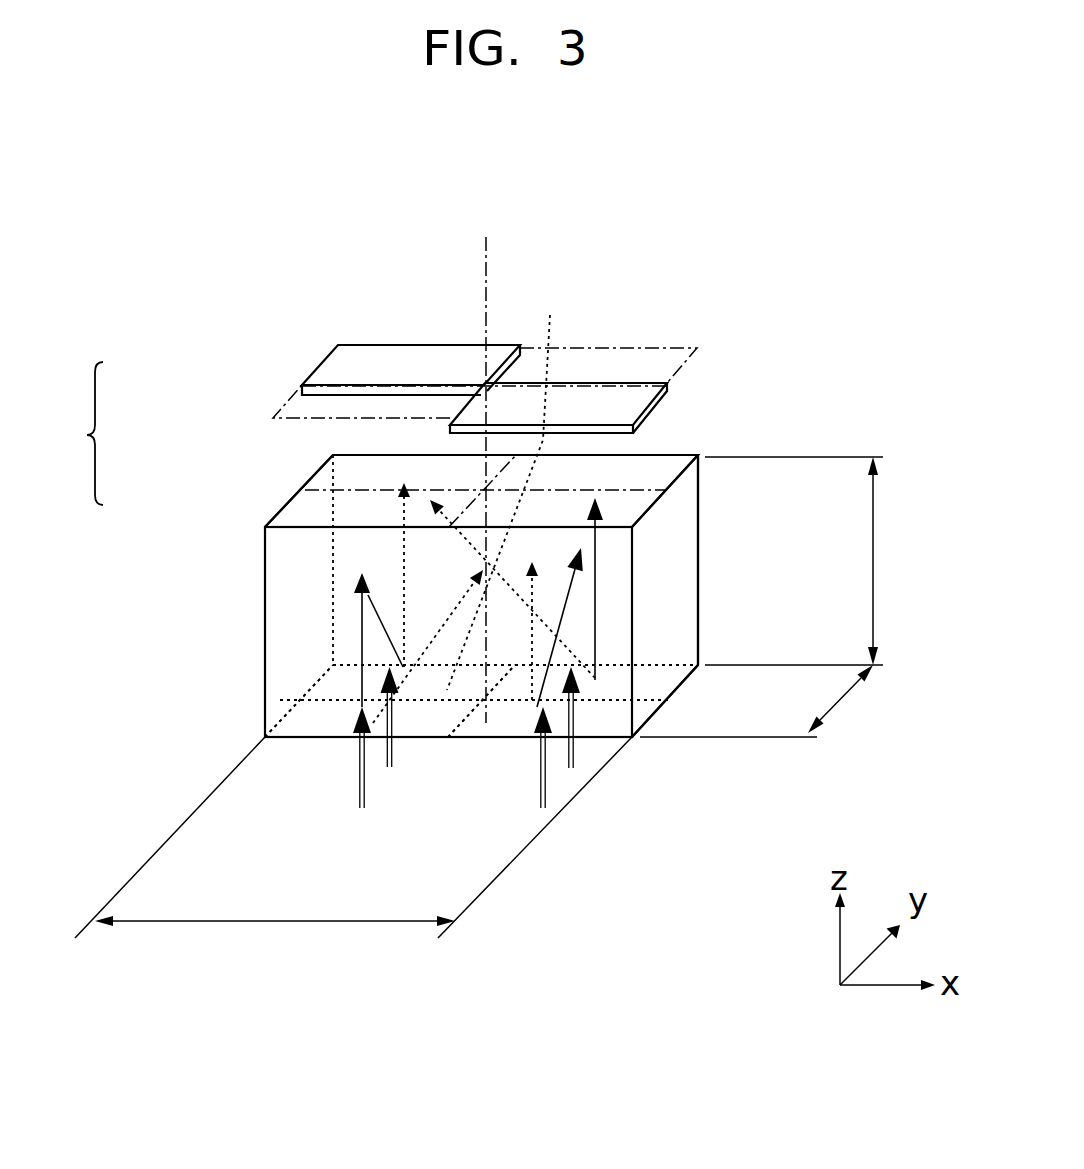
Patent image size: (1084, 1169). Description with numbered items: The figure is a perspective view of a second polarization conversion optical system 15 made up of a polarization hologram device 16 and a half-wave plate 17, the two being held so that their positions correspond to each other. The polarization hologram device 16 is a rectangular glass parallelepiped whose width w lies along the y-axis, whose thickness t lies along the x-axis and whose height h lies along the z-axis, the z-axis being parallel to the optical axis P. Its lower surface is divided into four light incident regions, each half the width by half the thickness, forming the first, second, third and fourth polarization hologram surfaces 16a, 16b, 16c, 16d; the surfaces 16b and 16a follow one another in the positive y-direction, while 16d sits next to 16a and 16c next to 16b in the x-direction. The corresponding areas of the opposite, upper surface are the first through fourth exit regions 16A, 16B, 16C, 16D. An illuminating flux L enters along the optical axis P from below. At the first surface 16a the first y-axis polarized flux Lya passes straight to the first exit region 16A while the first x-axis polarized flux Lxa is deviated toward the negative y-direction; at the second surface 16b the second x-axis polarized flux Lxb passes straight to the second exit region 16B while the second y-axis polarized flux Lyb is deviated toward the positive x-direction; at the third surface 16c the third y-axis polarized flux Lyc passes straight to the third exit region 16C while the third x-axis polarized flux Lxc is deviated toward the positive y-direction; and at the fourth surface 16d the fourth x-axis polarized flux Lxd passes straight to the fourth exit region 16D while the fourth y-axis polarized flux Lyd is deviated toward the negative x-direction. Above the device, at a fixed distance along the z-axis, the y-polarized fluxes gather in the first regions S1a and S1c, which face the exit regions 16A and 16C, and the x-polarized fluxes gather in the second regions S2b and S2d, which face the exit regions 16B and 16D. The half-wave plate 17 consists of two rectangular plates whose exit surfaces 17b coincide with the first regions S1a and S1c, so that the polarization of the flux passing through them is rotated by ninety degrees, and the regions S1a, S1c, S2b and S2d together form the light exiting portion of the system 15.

The second polarization conversion optical system 15 is at (84, 452).
The polarization hologram device 16 is at (230, 548).
The half-wave plate 17 is at (444, 310).
The exit surface 17b is at (526, 310).
The first region S1a is at (355, 353).
The first region S1c is at (625, 400).
The second region S2b is at (412, 387).
The second region S2d is at (587, 347).
The optical axis P is at (485, 268).
The first exit region 16A is at (343, 481).
The second exit region 16B is at (297, 517).
The third exit region 16C is at (633, 507).
The fourth exit region 16D is at (657, 470).
The first polarization hologram surface 16a is at (333, 665).
The second polarization hologram surface 16b is at (318, 723).
The third polarization hologram surface 16c is at (518, 738).
The fourth polarization hologram surface 16d is at (665, 682).
The illuminating flux L is at (357, 788).
The first x-axis polarized flux Lxa is at (378, 621).
The second x-axis polarized flux Lxb is at (362, 683).
The third x-axis polarized flux Lxc is at (563, 620).
The fourth x-axis polarized flux Lxd is at (597, 602).
The first y-axis polarized flux Lya is at (404, 556).
The second y-axis polarized flux Lyb is at (434, 640).
The third y-axis polarized flux Lyc is at (532, 680).
The fourth y-axis polarized flux Lyd is at (512, 480).
The height h is at (806, 561).
The width w is at (756, 701).
The thickness t is at (353, 851).